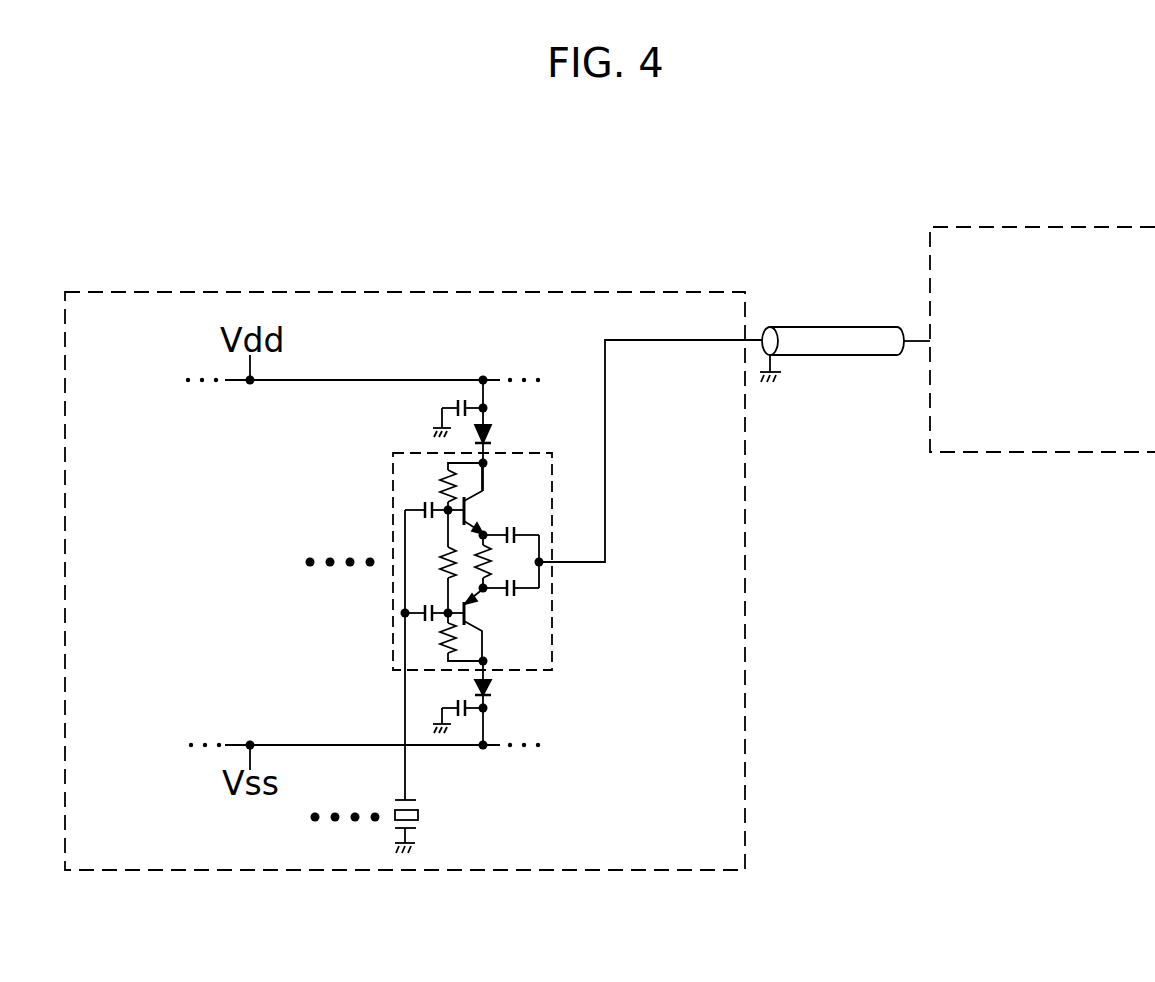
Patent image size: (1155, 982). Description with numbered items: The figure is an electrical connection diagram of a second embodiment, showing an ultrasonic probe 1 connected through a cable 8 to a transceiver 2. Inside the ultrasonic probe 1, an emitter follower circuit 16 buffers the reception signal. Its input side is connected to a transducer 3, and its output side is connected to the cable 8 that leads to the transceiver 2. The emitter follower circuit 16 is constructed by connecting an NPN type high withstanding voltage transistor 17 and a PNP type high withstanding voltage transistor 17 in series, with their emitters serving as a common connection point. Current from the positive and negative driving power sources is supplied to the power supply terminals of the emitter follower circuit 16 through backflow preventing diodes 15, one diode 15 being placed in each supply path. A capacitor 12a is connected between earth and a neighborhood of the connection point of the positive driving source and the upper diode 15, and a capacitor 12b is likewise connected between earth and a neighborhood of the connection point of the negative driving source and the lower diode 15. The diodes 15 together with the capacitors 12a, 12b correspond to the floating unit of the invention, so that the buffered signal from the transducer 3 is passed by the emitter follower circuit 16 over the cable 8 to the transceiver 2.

The ultrasonic probe 1 is at (290, 292).
The transceiver 2 is at (1003, 227).
The transducer 3 is at (418, 815).
The cable 8 is at (812, 327).
The capacitor 12a is at (455, 406).
The capacitor 12b is at (470, 715).
The diode 15 is at (490, 432).
The emitter follower circuit 16 is at (393, 487).
The transistor 17 is at (477, 510).